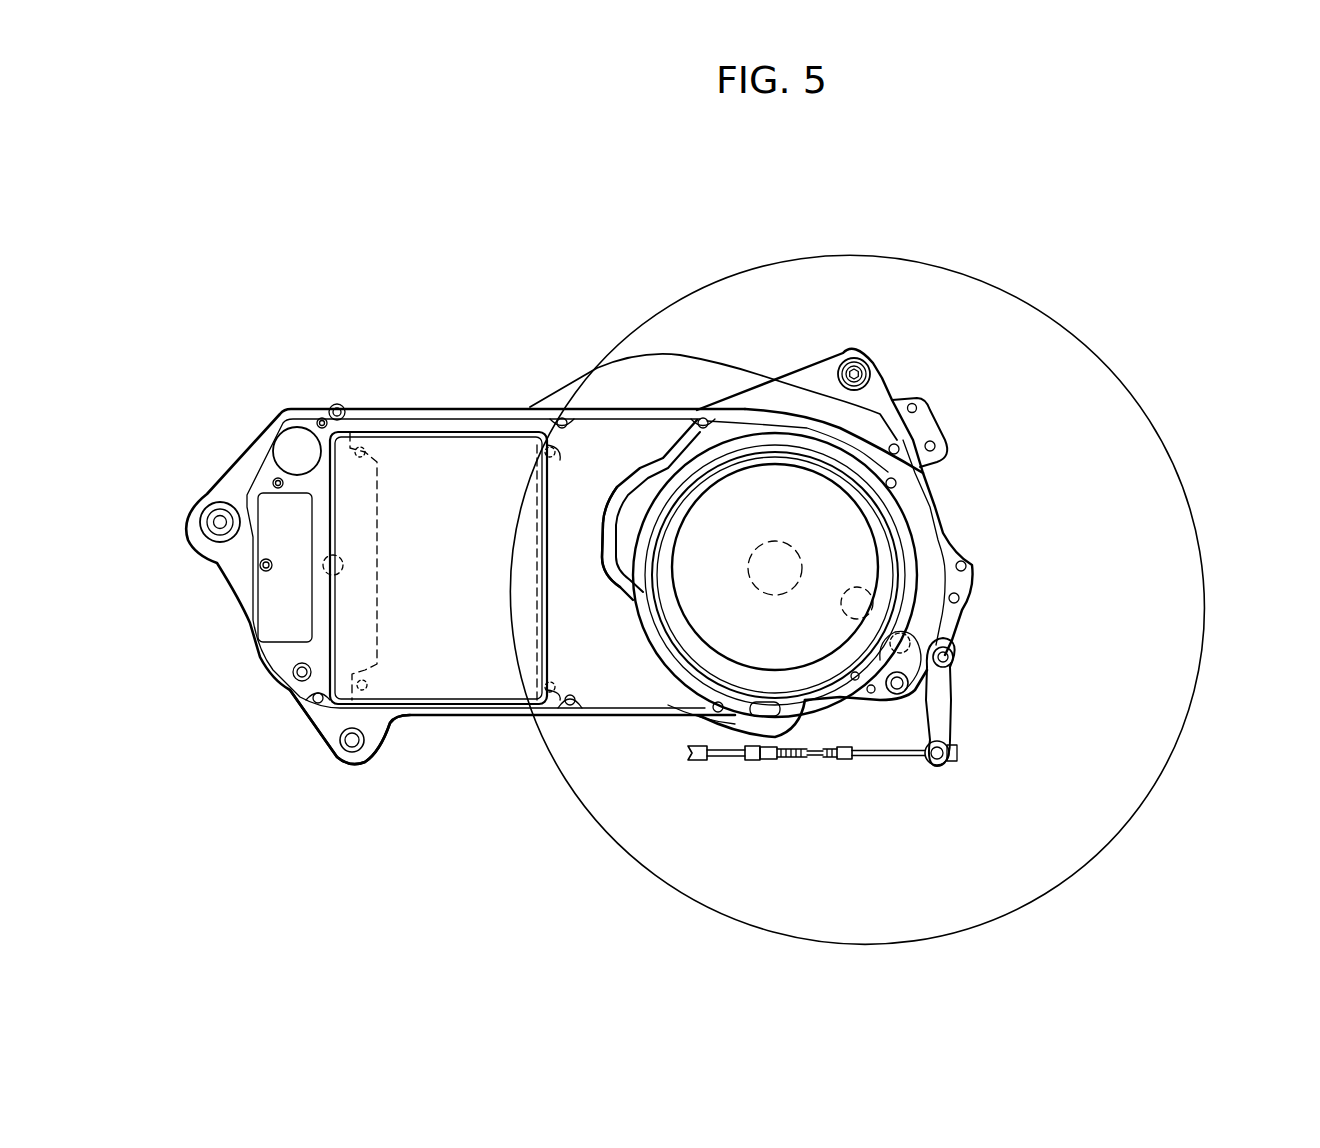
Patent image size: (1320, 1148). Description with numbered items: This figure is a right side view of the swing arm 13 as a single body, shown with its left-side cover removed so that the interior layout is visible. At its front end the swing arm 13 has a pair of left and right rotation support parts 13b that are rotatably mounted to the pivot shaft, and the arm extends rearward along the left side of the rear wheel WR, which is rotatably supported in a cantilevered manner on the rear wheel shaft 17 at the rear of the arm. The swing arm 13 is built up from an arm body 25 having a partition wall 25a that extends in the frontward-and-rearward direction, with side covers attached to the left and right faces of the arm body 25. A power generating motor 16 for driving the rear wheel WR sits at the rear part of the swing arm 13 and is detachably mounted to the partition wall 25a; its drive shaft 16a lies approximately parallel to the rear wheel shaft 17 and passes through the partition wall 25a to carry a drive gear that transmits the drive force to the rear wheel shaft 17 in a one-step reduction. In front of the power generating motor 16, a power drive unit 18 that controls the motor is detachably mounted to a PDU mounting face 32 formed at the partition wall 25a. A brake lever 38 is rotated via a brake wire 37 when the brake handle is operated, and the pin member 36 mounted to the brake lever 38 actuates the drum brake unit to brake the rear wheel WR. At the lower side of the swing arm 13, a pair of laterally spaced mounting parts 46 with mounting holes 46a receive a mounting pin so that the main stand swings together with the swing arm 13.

The swing arm 13 is at (415, 407).
The rotation support part 13b is at (220, 538).
The power generating motor 16 is at (840, 540).
The drive shaft 16a is at (775, 541).
The rear wheel shaft 17 is at (857, 600).
The power drive unit (PDU) 18 is at (475, 673).
The arm body 25 is at (600, 457).
The partition wall 25a is at (627, 675).
The PDU mounting face 32 is at (460, 500).
The pin member 36 is at (943, 677).
The brake wire 37 is at (727, 760).
The brake lever 38 is at (943, 720).
The mounting part 46 is at (325, 727).
The mounting hole 46a is at (353, 750).
The rear wheel WR is at (1153, 723).